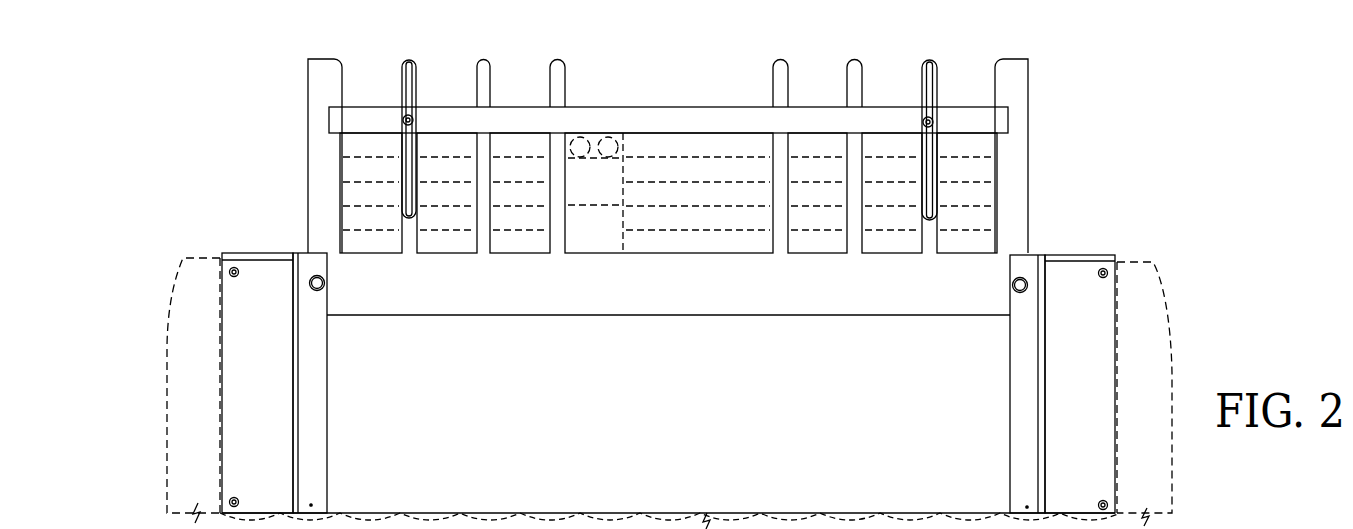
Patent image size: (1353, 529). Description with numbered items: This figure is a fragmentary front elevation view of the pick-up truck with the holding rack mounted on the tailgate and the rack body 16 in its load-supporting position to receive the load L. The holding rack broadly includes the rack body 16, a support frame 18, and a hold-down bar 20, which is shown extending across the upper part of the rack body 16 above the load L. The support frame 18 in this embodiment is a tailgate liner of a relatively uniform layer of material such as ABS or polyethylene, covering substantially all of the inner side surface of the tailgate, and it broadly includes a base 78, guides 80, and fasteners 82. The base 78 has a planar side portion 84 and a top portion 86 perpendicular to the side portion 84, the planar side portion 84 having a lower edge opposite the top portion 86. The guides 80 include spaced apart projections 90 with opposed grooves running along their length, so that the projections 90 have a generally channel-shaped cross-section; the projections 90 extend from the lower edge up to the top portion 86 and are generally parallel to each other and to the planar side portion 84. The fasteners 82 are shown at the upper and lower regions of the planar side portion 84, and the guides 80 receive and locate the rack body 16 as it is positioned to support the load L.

The rack body 16 is at (318, 90).
The support frame 18 is at (250, 268).
The hold-down bar 20 is at (583, 113).
The load L is at (522, 147).
The base 78 is at (1075, 257).
The guides 80 is at (293, 253).
The fasteners 82 is at (230, 272).
The planar side portion 84 is at (245, 347).
The top portion 86 is at (1110, 260).
The projections 90 is at (317, 373).